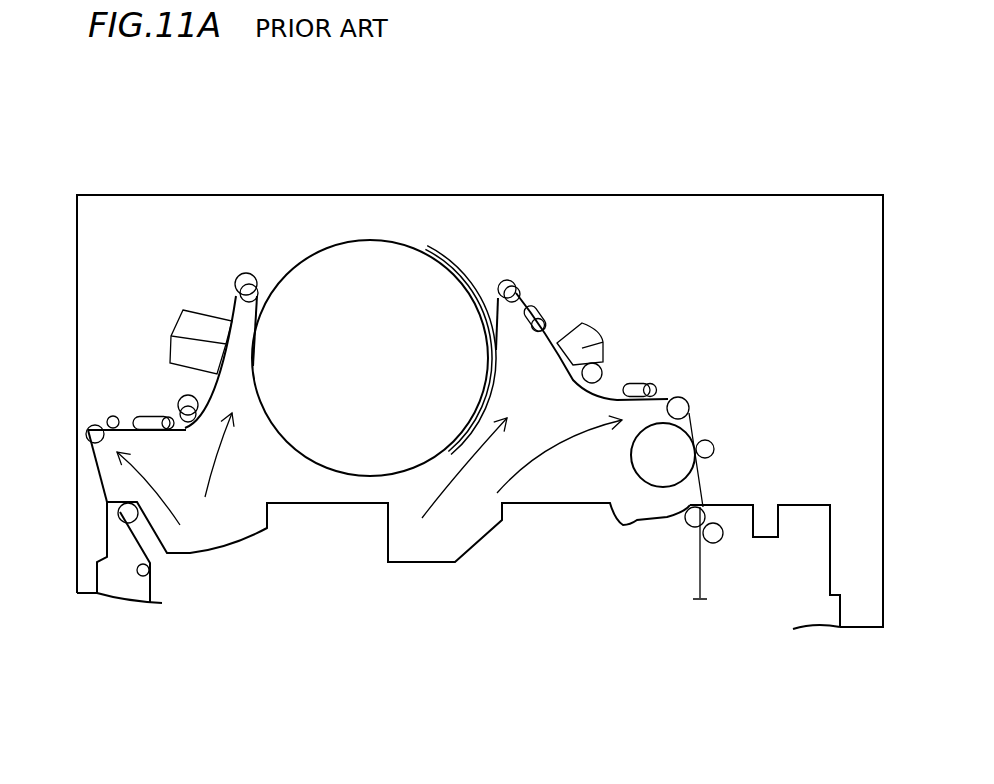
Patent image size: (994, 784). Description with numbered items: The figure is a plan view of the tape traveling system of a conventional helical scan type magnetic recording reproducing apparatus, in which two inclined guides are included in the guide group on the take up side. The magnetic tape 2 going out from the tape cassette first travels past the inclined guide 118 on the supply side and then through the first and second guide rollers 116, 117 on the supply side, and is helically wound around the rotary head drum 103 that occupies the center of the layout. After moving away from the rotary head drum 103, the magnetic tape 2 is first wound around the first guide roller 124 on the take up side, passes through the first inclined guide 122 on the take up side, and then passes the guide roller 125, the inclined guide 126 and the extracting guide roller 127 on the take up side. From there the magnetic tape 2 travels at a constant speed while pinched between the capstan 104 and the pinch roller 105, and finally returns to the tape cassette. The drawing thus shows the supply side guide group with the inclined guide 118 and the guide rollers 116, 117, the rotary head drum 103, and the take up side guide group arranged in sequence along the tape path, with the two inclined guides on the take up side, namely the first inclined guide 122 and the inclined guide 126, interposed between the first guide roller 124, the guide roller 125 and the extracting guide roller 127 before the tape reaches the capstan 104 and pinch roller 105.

The magnetic tape 2 is at (98, 482).
The rotary head drum 103 is at (400, 263).
The capstan 104 is at (707, 456).
The pinch roller 105 is at (655, 466).
The roller 116 is at (189, 418).
The roller 117 is at (247, 273).
The inclined guide on the supply side 118 is at (142, 415).
The first inclined guide on the take up side 122 is at (537, 315).
The first guide roller on the take up side 124 is at (508, 280).
The guide roller 125 is at (601, 364).
The inclined guide 126 is at (635, 385).
The extracting guide roller on the take up side 127 is at (684, 400).